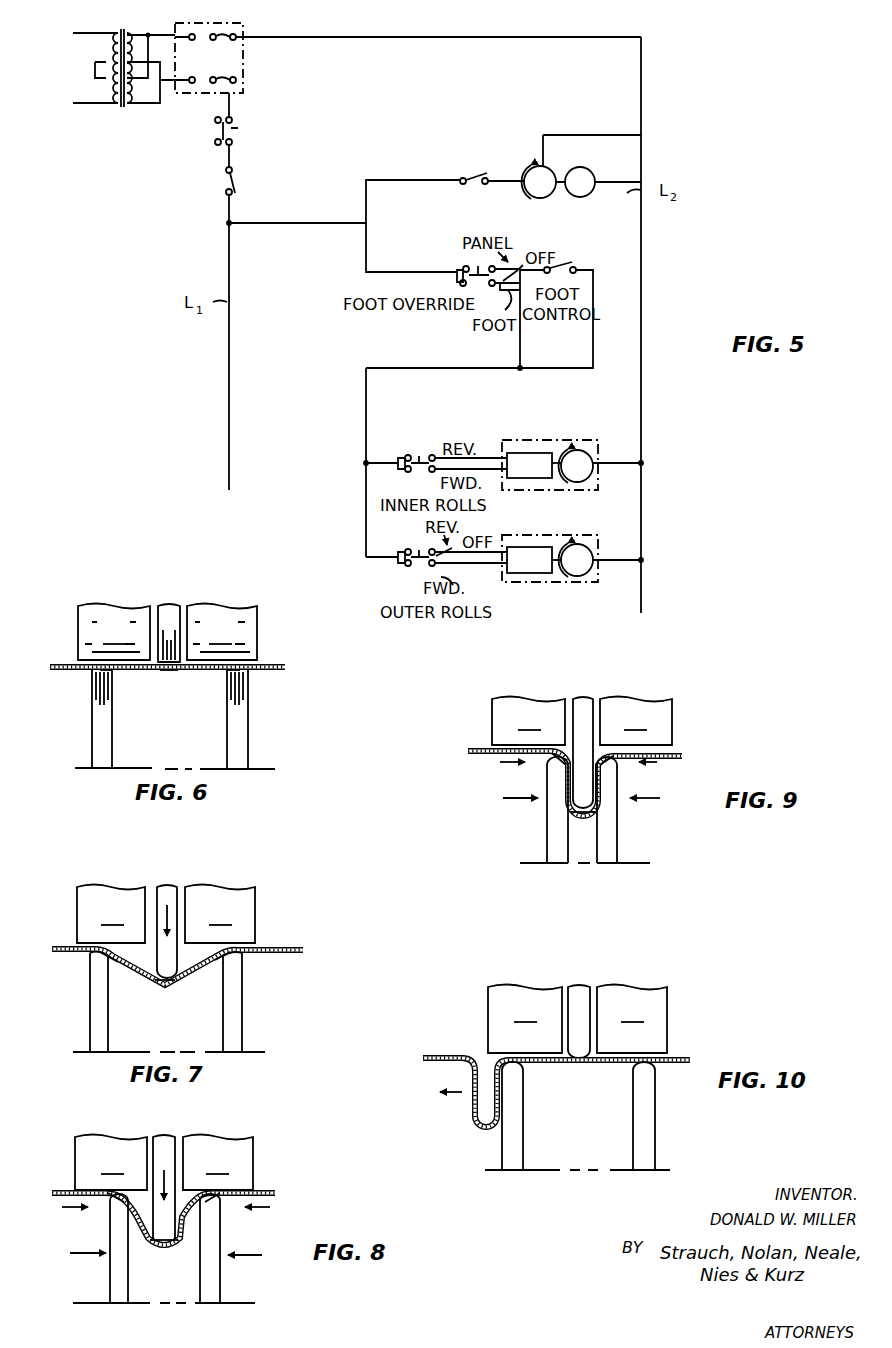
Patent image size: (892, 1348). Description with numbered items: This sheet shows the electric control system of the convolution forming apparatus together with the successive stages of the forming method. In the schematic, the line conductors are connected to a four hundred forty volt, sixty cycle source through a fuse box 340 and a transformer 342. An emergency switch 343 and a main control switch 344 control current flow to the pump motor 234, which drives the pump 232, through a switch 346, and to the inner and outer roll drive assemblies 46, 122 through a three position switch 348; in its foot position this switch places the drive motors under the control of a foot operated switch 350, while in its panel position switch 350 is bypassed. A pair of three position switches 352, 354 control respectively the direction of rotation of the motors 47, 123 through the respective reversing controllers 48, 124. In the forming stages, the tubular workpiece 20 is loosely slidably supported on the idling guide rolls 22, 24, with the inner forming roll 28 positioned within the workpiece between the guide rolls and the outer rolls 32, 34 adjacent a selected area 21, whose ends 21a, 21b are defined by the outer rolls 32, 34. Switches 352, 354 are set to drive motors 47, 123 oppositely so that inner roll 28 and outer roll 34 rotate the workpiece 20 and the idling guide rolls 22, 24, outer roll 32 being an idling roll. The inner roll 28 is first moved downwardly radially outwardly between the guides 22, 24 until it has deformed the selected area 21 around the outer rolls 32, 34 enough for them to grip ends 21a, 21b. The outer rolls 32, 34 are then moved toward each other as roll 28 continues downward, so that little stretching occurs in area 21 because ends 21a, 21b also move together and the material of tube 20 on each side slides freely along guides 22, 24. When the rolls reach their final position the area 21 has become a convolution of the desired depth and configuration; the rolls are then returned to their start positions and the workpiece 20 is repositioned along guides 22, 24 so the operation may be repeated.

In FIG. 5, the fuse box 340 is at (243, 37).
In FIG. 5, the transformer 342 is at (144, 33).
In FIG. 5, the emergency switch 343 is at (234, 123).
In FIG. 5, the main control switch 344 is at (238, 184).
In FIG. 5, the pump motor switch 346 is at (476, 171).
In FIG. 5, the three position switch 348 is at (460, 269).
In FIG. 5, the foot operated switch 350 is at (566, 262).
In FIG. 5, the three position switch 352 is at (418, 450).
In FIG. 5, the three position switch 354 is at (418, 548).
In FIG. 5, the pump motor 234 is at (538, 198).
In FIG. 5, the pump 232 is at (580, 197).
In FIG. 5, the inner roll drive assembly 46 is at (556, 436).
In FIG. 5, the inner roll drive motor 47 is at (592, 480).
In FIG. 5, the reversing controller 48 is at (529, 465).
In FIG. 5, the outer roll drive assembly 122 is at (527, 591).
In FIG. 5, the outer roll drive motor 123 is at (594, 582).
In FIG. 5, the reversing controller 124 is at (529, 560).
In FIG. 6, the tubular workpiece 20 is at (272, 664).
In FIG. 7, the tubular workpiece 20 is at (287, 949).
In FIG. 8, the tubular workpiece 20 is at (268, 1196).
In FIG. 9, the tubular workpiece 20 is at (680, 752).
In FIG. 10, the tubular workpiece 20 is at (680, 1057).
In FIG. 6, the selected area 21 is at (168, 674).
In FIG. 7, the selected area 21 is at (173, 994).
In FIG. 8, the selected area 21 is at (175, 1249).
In FIG. 9, the selected area 21 is at (583, 829).
In FIG. 6, the end of selected area 21a is at (113, 668).
In FIG. 7, the end of selected area 21a is at (117, 963).
In FIG. 8, the end of selected area 21a is at (115, 1198).
In FIG. 9, the end of selected area 21a is at (557, 760).
In FIG. 6, the end of selected area 21b is at (227, 671).
In FIG. 7, the end of selected area 21b is at (217, 963).
In FIG. 8, the end of selected area 21b is at (217, 1197).
In FIG. 9, the end of selected area 21b is at (620, 760).
In FIG. 6, the guide roll 22 is at (114, 632).
In FIG. 7, the guide roll 22 is at (111, 914).
In FIG. 8, the guide roll 22 is at (111, 1163).
In FIG. 9, the guide roll 22 is at (528, 721).
In FIG. 10, the guide roll 22 is at (525, 1019).
In FIG. 6, the guide roll 24 is at (222, 632).
In FIG. 7, the guide roll 24 is at (220, 914).
In FIG. 8, the guide roll 24 is at (218, 1163).
In FIG. 9, the guide roll 24 is at (636, 721).
In FIG. 10, the guide roll 24 is at (632, 1019).
In FIG. 6, the inner forming roll 28 is at (168, 614).
In FIG. 7, the inner forming roll 28 is at (167, 893).
In FIG. 8, the inner forming roll 28 is at (168, 1143).
In FIG. 9, the inner forming roll 28 is at (585, 705).
In FIG. 10, the inner forming roll 28 is at (583, 992).
In FIG. 6, the outer roll 32 is at (242, 752).
In FIG. 7, the outer roll 32 is at (240, 1035).
In FIG. 8, the outer roll 32 is at (220, 1287).
In FIG. 9, the outer roll 32 is at (618, 845).
In FIG. 10, the outer roll 32 is at (642, 1164).
In FIG. 6, the outer roll 34 is at (98, 752).
In FIG. 7, the outer roll 34 is at (93, 1027).
In FIG. 8, the outer roll 34 is at (113, 1285).
In FIG. 9, the outer roll 34 is at (548, 845).
In FIG. 10, the outer roll 34 is at (513, 1164).